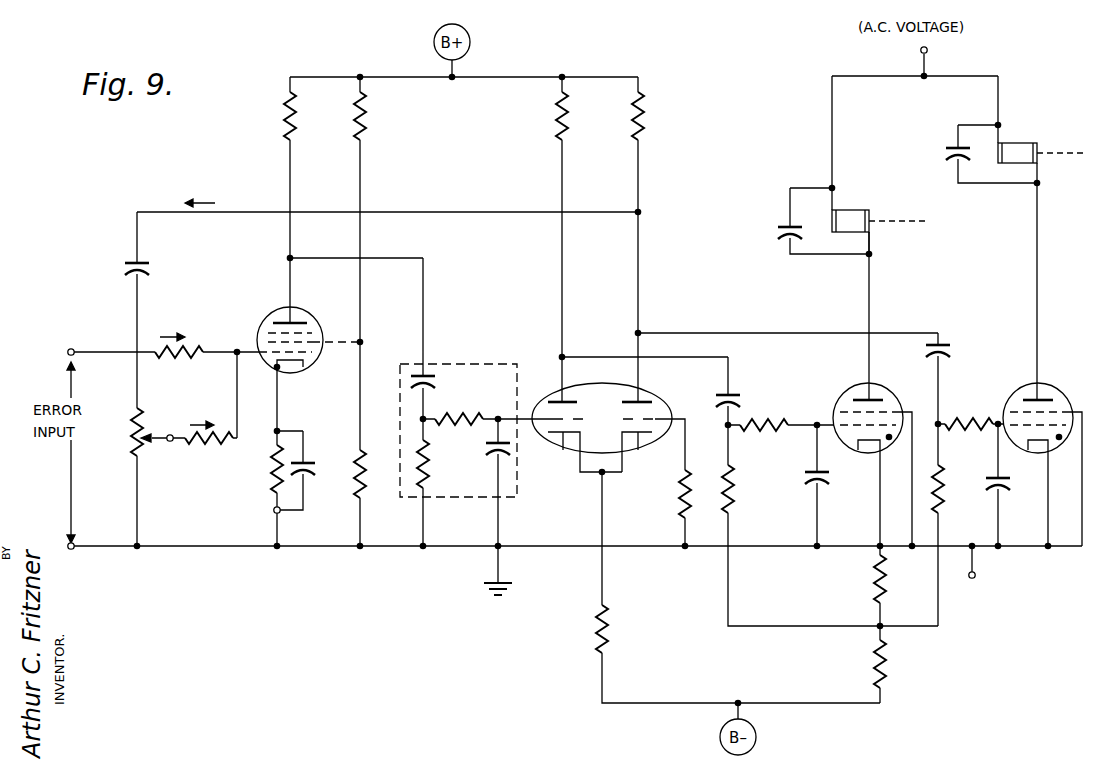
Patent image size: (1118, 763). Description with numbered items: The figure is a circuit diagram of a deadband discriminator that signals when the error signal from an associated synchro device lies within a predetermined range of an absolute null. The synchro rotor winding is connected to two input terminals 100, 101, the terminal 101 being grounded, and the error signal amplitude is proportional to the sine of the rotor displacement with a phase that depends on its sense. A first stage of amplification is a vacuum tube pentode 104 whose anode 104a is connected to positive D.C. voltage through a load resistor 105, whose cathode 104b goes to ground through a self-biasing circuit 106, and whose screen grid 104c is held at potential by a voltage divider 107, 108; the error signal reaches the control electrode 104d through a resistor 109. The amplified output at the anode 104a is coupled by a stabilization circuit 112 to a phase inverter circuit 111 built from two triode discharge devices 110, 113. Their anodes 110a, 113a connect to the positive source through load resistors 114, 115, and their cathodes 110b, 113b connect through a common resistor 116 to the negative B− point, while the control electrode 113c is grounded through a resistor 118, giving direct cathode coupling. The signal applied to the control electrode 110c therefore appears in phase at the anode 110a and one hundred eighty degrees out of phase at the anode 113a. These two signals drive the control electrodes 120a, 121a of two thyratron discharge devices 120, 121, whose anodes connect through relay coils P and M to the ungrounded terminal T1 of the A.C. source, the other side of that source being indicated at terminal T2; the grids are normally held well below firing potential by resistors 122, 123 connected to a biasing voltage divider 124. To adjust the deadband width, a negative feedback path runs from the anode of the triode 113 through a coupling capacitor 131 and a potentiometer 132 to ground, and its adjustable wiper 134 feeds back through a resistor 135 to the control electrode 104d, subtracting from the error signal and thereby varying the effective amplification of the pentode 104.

The input terminal 100 is at (72, 348).
The input terminal 101 is at (74, 550).
The vacuum tube pentode 104 is at (286, 342).
The anode 104a is at (296, 322).
The cathode 104b is at (299, 378).
The screen grid 104c is at (312, 342).
The control electrode 104d is at (305, 366).
The load resistor 105 is at (283, 122).
The self-biasing circuit 106 is at (273, 485).
The voltage divider resistor 107 is at (365, 124).
The voltage divider resistor 108 is at (358, 500).
The resistor 109 is at (170, 360).
The triode discharge device 110 is at (578, 429).
The anode 110a is at (582, 401).
The cathode 110b is at (563, 452).
The control electrode 110c is at (548, 418).
The phase inverter circuit 111 is at (618, 409).
The stabilization circuit 112 is at (454, 367).
The triode discharge device 113 is at (660, 429).
The anode 113a is at (648, 401).
The cathode 113b is at (634, 463).
The control electrode 113c is at (658, 417).
The load resistor 114 is at (558, 122).
The load resistor 115 is at (643, 118).
The common resistor 116 is at (606, 628).
The resistor 118 is at (683, 515).
The thyratron discharge device 120 is at (854, 389).
The control electrode 120a is at (844, 424).
The thyratron discharge device 121 is at (1025, 450).
The control electrode 121a is at (1014, 425).
The resistor 122 is at (732, 500).
The resistor 123 is at (942, 506).
The biasing voltage divider 124 is at (875, 656).
The coupling capacitor 131 is at (152, 268).
The potentiometer 132 is at (135, 464).
The adjustable wiper 134 is at (168, 442).
The resistor 135 is at (212, 448).
The relay coil P is at (854, 216).
The relay coil M is at (1014, 150).
The terminal T1 is at (928, 50).
The terminal T2 is at (976, 578).